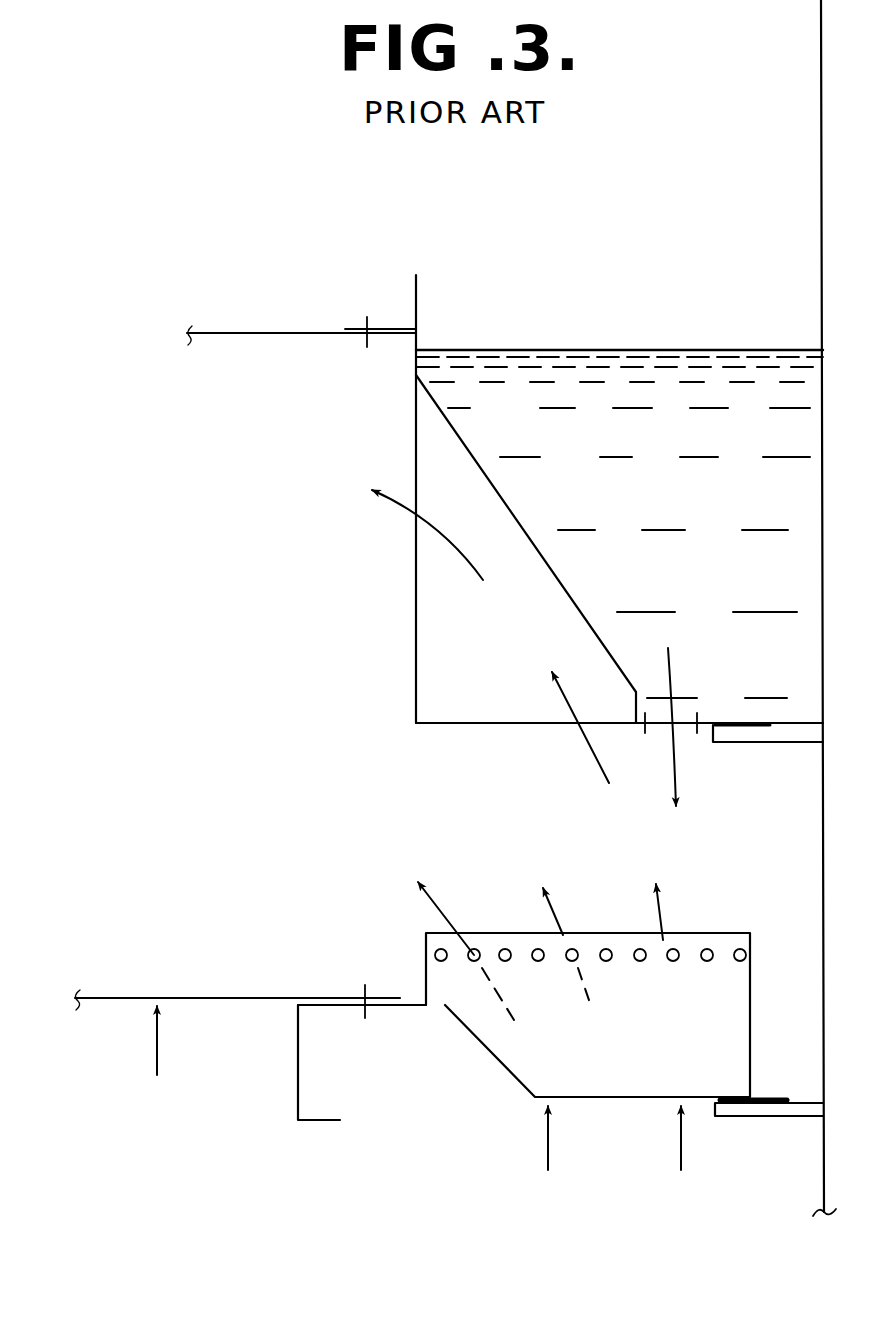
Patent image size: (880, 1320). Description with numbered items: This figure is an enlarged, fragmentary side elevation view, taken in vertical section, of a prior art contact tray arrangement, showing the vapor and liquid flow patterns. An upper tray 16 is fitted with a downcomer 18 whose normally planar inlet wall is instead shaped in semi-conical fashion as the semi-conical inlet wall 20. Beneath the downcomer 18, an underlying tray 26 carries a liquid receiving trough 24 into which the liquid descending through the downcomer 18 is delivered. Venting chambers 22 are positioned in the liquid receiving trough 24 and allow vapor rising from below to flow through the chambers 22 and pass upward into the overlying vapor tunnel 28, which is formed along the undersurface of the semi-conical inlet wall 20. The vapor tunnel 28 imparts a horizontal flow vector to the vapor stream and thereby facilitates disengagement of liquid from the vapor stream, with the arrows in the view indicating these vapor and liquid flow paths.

The tray 16 is at (272, 328).
The downcomer 18 is at (503, 303).
The semi-conical inlet wall 20 is at (514, 504).
The venting chamber 22 is at (740, 979).
The liquid receiving trough 24 is at (768, 1098).
The underlying tray 26 is at (215, 997).
The vapor tunnel 28 is at (497, 712).